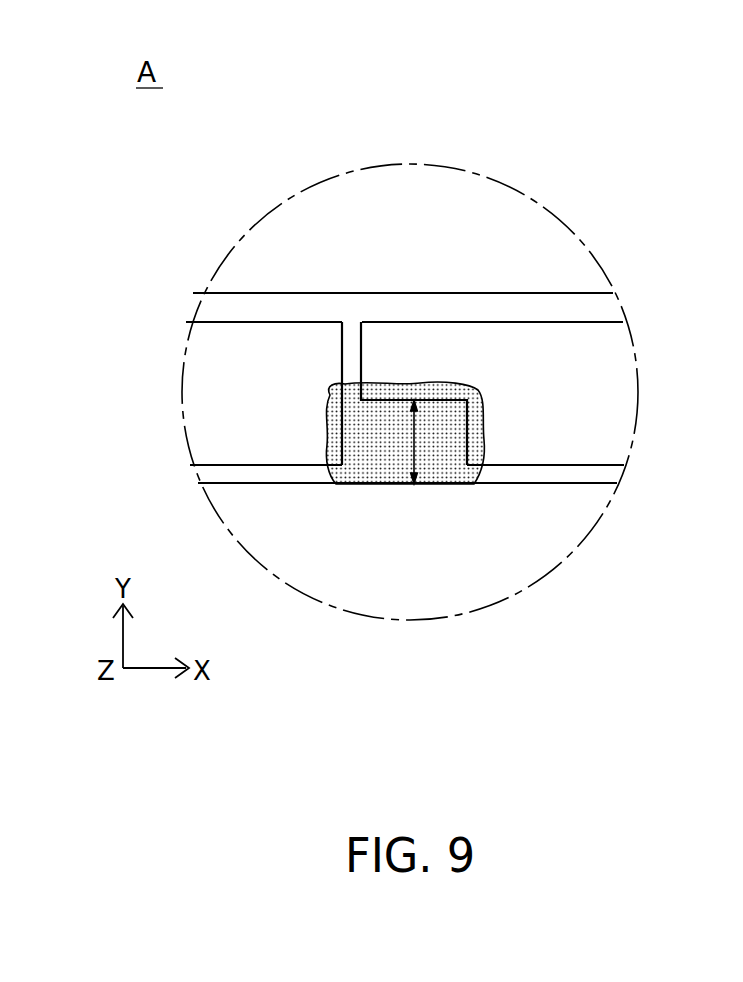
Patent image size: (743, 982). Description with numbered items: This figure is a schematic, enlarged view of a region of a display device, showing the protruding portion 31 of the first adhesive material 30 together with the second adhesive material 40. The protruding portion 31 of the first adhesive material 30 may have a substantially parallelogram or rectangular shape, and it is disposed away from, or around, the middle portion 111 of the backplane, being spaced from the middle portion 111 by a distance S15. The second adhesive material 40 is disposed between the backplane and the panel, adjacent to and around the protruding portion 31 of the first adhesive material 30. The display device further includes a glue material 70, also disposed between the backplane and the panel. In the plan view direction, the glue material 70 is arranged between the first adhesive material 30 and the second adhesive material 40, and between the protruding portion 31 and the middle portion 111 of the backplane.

The middle portion of the backplane 111 is at (293, 568).
The first adhesive material 30 is at (617, 379).
The second adhesive material 40 is at (198, 367).
The protruding portion 31 is at (406, 350).
The glue material 70 is at (362, 438).
The distance S15 is at (414, 441).